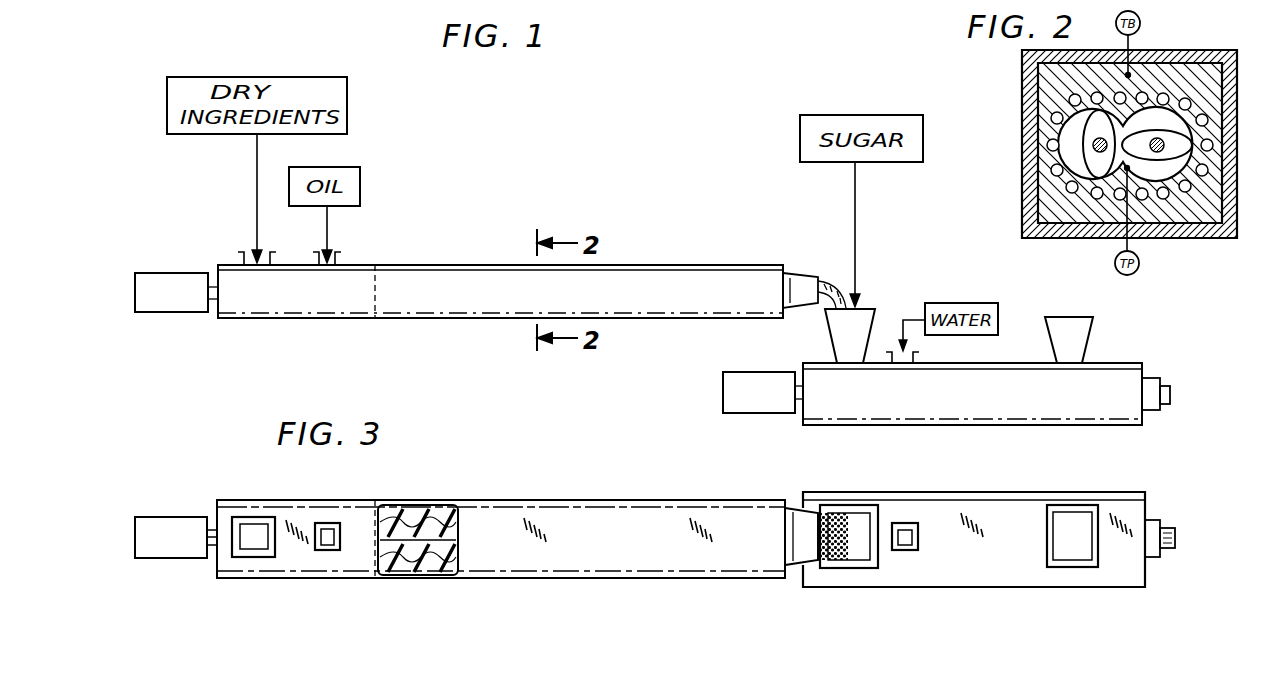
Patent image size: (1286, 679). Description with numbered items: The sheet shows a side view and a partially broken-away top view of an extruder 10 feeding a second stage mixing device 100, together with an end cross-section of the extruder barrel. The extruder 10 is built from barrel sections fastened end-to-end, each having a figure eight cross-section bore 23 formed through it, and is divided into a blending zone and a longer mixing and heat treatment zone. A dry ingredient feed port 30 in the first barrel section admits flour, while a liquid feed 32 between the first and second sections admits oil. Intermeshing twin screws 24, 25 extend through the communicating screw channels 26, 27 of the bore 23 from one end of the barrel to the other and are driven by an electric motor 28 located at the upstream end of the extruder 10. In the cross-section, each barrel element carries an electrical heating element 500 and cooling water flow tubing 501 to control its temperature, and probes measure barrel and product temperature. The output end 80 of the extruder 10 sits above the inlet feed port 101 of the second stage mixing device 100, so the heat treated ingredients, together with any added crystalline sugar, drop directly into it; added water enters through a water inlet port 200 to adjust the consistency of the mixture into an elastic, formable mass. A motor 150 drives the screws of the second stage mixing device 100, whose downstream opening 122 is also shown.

In FIG. 1, the extruder 10 is at (496, 238).
In FIG. 2, the extruder 10 is at (1200, 200).
In FIG. 3, the extruder 10 is at (500, 490).
In FIG. 2, the figure eight cross-section bore 23 is at (1165, 120).
In FIG. 2, the twin screw 24 is at (1200, 204).
In FIG. 3, the twin screw 24 is at (432, 505).
In FIG. 2, the twin screw 25 is at (1072, 198).
In FIG. 3, the twin screw 25 is at (425, 577).
In FIG. 2, the screw channel 26 is at (1105, 176).
In FIG. 2, the screw channel 27 is at (1170, 178).
In FIG. 1, the electric motor 28 is at (163, 312).
In FIG. 3, the electric motor 28 is at (176, 519).
In FIG. 1, the dry ingredient feed port 30 is at (240, 262).
In FIG. 3, the dry ingredient feed port 30 is at (253, 517).
In FIG. 1, the liquid feed 32 is at (342, 258).
In FIG. 3, the liquid feed 32 is at (323, 523).
In FIG. 1, the output end 80 is at (802, 272).
In FIG. 3, the output end 80 is at (797, 514).
In FIG. 1, the second stage mixing device 100 is at (896, 428).
In FIG. 3, the second stage mixing device 100 is at (1086, 484).
In FIG. 1, the inlet feed port 101 is at (828, 333).
In FIG. 3, the inlet feed port 101 is at (862, 505).
In FIG. 1, the outlet hopper 122 is at (1050, 336).
In FIG. 3, the outlet hopper 122 is at (1046, 520).
In FIG. 1, the motor 150 is at (774, 414).
In FIG. 1, the water inlet port 200 is at (914, 358).
In FIG. 3, the water inlet port 200 is at (906, 523).
In FIG. 2, the electrical heating element 500 is at (1210, 51).
In FIG. 2, the cooling water flow tubing 501 is at (1208, 116).